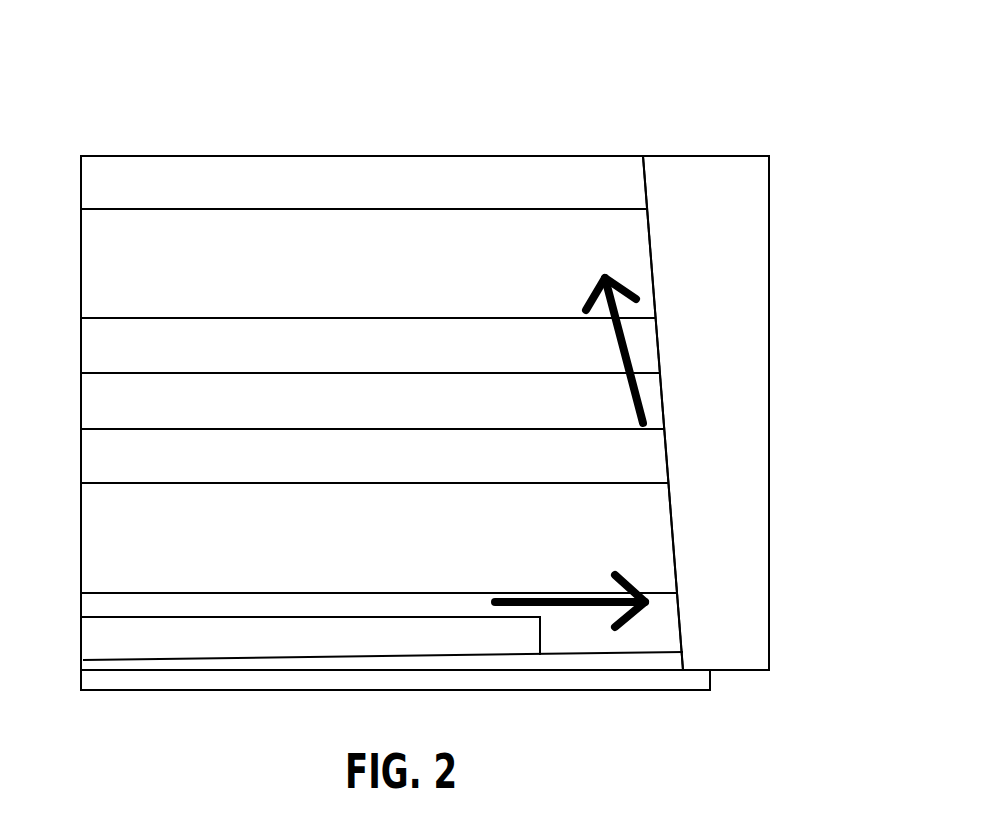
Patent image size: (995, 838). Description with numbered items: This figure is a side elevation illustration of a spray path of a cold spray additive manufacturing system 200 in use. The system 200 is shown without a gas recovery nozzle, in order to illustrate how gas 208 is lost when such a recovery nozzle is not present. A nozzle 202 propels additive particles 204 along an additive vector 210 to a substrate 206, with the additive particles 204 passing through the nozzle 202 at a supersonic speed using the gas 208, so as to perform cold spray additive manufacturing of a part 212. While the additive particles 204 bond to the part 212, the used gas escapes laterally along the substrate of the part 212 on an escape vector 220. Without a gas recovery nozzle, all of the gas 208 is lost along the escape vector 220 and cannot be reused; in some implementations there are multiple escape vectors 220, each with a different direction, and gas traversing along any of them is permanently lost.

The cold spray additive manufacturing system 200 is at (812, 90).
The nozzle 202 is at (117, 617).
The additive particles 204 is at (175, 673).
The substrate 206 is at (775, 477).
The gas 208 is at (642, 448).
The additive vector 210 is at (587, 625).
The part 212 is at (775, 522).
The escape vector 220 is at (583, 338).